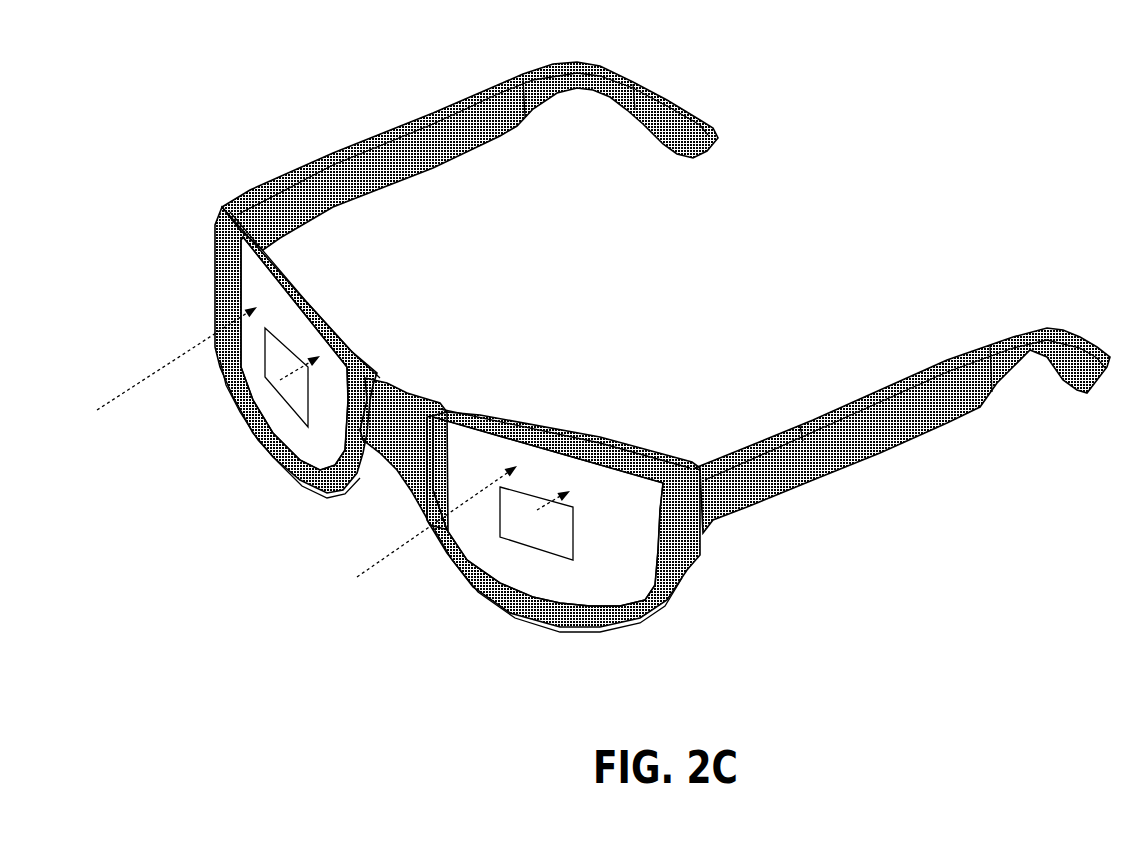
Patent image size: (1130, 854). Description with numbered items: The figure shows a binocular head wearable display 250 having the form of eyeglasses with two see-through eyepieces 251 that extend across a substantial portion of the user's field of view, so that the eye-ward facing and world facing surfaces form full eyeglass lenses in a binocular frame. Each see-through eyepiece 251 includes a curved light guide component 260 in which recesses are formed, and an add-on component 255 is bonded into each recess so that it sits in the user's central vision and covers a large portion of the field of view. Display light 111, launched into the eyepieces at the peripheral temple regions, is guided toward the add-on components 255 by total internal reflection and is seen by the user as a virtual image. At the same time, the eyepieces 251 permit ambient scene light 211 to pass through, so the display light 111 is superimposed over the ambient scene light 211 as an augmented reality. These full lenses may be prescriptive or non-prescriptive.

The binocular head wearable display 250 is at (958, 87).
The curved light guide component 260 is at (247, 303).
The see-through eyepiece 251 is at (253, 387).
The add-on component 255 is at (297, 390).
The ambient scene light 211 is at (120, 390).
The display light 111 is at (314, 362).